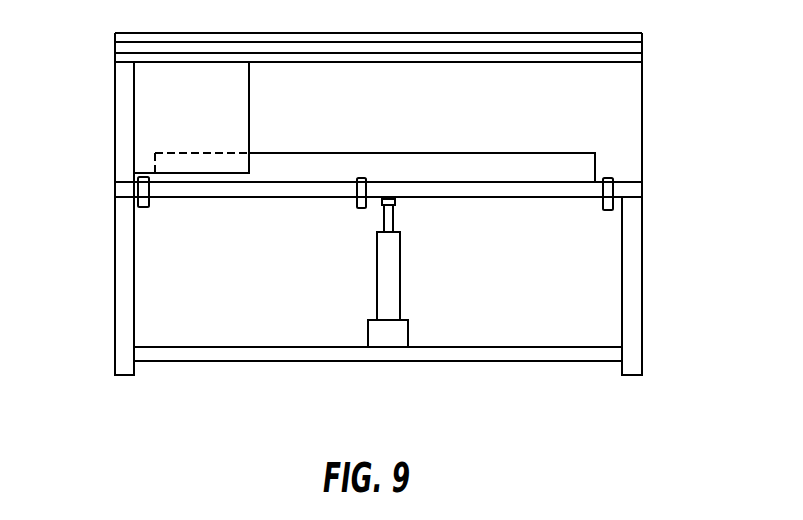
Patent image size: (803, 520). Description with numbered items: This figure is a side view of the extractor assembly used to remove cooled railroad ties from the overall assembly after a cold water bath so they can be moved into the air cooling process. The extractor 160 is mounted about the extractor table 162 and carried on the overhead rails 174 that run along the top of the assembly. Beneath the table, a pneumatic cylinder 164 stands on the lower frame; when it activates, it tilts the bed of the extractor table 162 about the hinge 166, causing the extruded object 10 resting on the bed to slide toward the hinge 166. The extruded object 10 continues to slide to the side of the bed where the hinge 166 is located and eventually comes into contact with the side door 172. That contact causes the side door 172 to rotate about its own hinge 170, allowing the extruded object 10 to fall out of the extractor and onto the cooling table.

The extruded object 10 is at (430, 157).
The extractor 160 is at (235, 120).
The extractor table 162 is at (118, 265).
The pneumatic cylinder 164 is at (392, 285).
The hinge 166 is at (617, 193).
The hinge 170 is at (641, 35).
The side door 172 is at (635, 150).
The overhead rails 174 is at (642, 62).